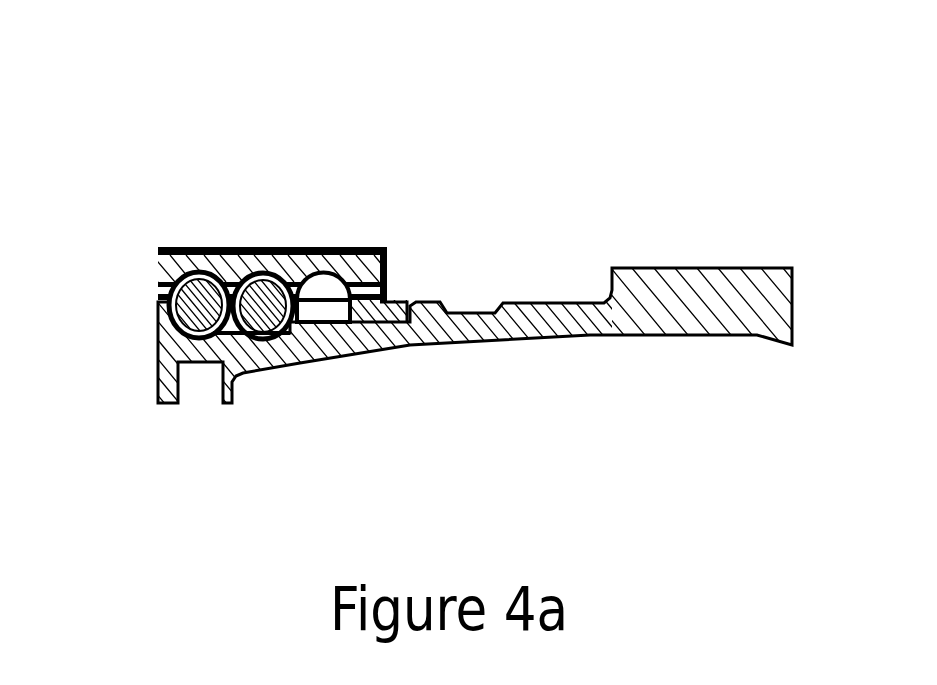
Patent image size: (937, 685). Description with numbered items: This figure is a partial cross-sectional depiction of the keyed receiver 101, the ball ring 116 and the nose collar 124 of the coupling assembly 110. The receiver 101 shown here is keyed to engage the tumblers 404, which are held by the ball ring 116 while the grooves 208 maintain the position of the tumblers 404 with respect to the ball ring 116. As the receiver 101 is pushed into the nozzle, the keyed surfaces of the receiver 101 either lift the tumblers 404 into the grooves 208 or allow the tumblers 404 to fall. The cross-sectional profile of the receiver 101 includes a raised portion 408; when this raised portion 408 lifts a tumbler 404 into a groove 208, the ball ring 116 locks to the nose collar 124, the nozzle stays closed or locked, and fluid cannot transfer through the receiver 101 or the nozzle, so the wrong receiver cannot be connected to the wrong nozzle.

The seal assembly 110 is at (115, 70).
The keyed receiver 101 is at (518, 303).
The raised portion 408 is at (313, 323).
The nose collar 124 is at (358, 263).
The ball ring 116 is at (393, 318).
The tumblers 404 is at (240, 292).
The grooves 208 is at (212, 285).